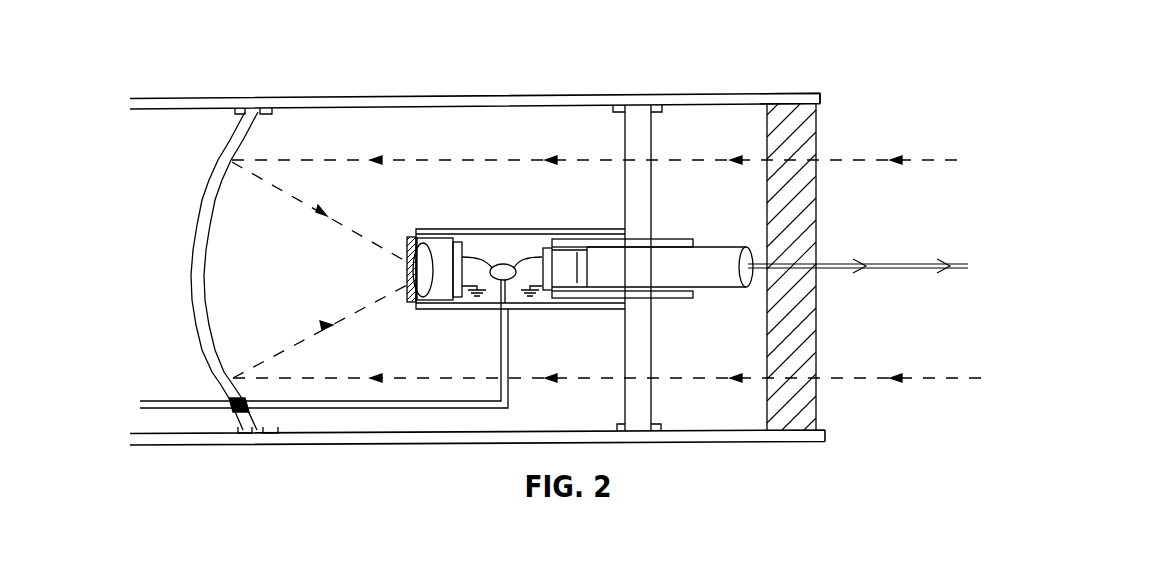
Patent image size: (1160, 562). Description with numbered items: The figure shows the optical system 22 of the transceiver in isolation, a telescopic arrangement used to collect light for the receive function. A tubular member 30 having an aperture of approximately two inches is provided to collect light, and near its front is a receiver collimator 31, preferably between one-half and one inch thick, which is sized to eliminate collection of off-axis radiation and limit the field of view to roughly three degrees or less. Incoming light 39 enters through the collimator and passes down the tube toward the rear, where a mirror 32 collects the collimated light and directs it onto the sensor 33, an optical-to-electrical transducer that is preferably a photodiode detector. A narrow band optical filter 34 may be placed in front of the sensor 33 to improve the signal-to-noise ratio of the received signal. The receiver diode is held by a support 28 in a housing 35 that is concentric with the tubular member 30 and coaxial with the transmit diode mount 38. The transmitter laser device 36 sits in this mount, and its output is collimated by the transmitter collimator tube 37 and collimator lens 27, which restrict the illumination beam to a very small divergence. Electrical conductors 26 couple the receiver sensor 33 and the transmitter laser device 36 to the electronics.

The optical system 22 is at (446, 70).
The electrical conductors 26 is at (167, 401).
The collimator lens 27 is at (758, 285).
The support 28 is at (624, 200).
The tubular member 30 is at (779, 93).
The receiver collimator 31 is at (816, 214).
The mirror 32 is at (192, 273).
The sensor 33 is at (441, 262).
The narrow band optical filter 34 is at (407, 300).
The housing 35 is at (478, 229).
The transmitter laser device 36 is at (547, 257).
The transmitter collimator tube 37 is at (720, 246).
The transmit diode mount 38 is at (676, 239).
The incoming light rays 39 is at (842, 128).